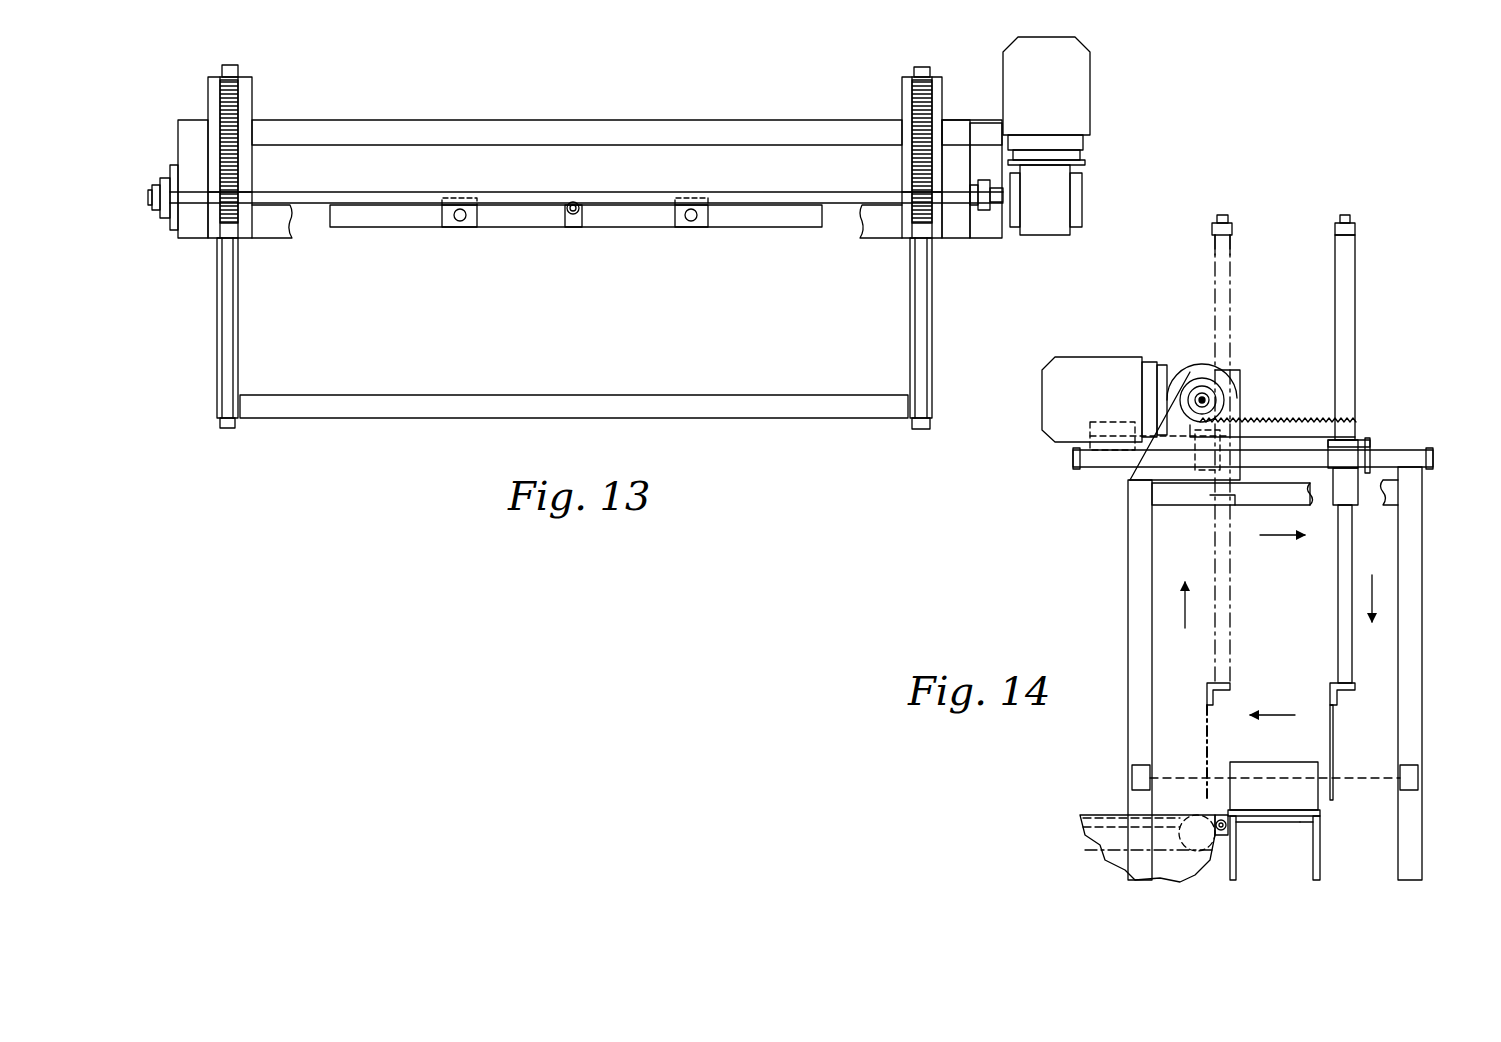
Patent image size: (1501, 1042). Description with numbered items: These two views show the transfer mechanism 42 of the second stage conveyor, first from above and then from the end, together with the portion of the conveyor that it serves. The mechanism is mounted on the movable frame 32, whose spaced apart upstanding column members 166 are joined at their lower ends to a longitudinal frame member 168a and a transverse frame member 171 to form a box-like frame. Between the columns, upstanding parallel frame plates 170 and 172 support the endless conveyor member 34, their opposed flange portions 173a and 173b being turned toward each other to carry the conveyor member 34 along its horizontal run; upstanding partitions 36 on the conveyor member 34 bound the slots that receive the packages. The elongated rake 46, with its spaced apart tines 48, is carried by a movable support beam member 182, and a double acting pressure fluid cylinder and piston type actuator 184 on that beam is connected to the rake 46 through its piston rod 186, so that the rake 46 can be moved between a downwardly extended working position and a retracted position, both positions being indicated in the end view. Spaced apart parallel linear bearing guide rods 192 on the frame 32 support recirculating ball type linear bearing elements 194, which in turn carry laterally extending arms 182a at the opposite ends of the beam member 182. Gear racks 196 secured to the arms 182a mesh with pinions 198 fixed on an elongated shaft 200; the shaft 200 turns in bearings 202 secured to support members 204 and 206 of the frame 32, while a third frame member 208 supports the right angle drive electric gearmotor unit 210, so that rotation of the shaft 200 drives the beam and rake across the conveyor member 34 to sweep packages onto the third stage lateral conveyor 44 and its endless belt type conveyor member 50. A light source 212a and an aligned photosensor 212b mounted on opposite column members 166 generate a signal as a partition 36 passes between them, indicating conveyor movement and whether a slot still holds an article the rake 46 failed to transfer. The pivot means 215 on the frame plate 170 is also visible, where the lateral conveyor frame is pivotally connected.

In FIG. 13, the frame 32 is at (730, 418).
In FIG. 14, the frame 32 is at (1425, 740).
In FIG. 14, the conveyor member 34 is at (1268, 816).
In FIG. 14, the partition 36 is at (1255, 760).
In FIG. 13, the transfer mechanism 42 is at (705, 95).
In FIG. 14, the transfer mechanism 42 is at (1290, 215).
In FIG. 14, the third stage lateral conveyor 44 is at (1082, 830).
In FIG. 13, the rake member 46 is at (385, 227).
In FIG. 14, the rake member 46 is at (1208, 700).
In FIG. 14, the tines 48 is at (1333, 752).
In FIG. 14, the belt type conveyor member 50 is at (1105, 810).
In FIG. 14, the column members 166 is at (1135, 605).
In FIG. 13, the longitudinal frame member 168a is at (527, 120).
In FIG. 14, the frame plate 170 is at (1237, 855).
In FIG. 14, the transverse frame member 171 is at (1218, 522).
In FIG. 14, the frame plate 172 is at (1322, 855).
In FIG. 14, the flange portion 173a is at (1245, 828).
In FIG. 14, the flange portion 173b is at (1312, 832).
In FIG. 13, the support beam member 182 is at (278, 235).
In FIG. 14, the support beam member 182 is at (1352, 440).
In FIG. 13, the laterally extending arms 182a is at (245, 108).
In FIG. 14, the laterally extending arms 182a is at (1322, 420).
In FIG. 13, the pressure fluid cylinder and piston type actuator 184 is at (582, 215).
In FIG. 14, the pressure fluid cylinder and piston type actuator 184 is at (1235, 275).
In FIG. 14, the piston rod 186 is at (1340, 628).
In FIG. 13, the linear bearing guide rods 192 is at (238, 318).
In FIG. 14, the linear bearing guide rods 192 is at (1375, 443).
In FIG. 14, the linear bearing elements 194 is at (1150, 512).
In FIG. 13, the gear racks 196 is at (234, 95).
In FIG. 14, the gear racks 196 is at (1248, 432).
In FIG. 13, the pinions 198 is at (232, 192).
In FIG. 14, the pinions 198 is at (1250, 372).
In FIG. 13, the shaft 200 is at (370, 192).
In FIG. 13, the bearings 202 is at (165, 210).
In FIG. 14, the bearings 202 is at (1185, 360).
In FIG. 13, the support member 204 is at (178, 135).
In FIG. 14, the support member 204 is at (1165, 428).
In FIG. 13, the support member 206 is at (955, 122).
In FIG. 13, the third frame member 208 is at (988, 135).
In FIG. 13, the right angle drive electric gearmotor unit 210 is at (1090, 100).
In FIG. 14, the right angle drive electric gearmotor unit 210 is at (1100, 360).
In FIG. 14, the light source 212a is at (1455, 765).
In FIG. 14, the photosensor 212b is at (1132, 770).
In FIG. 14, the pivot means 215 is at (1215, 822).